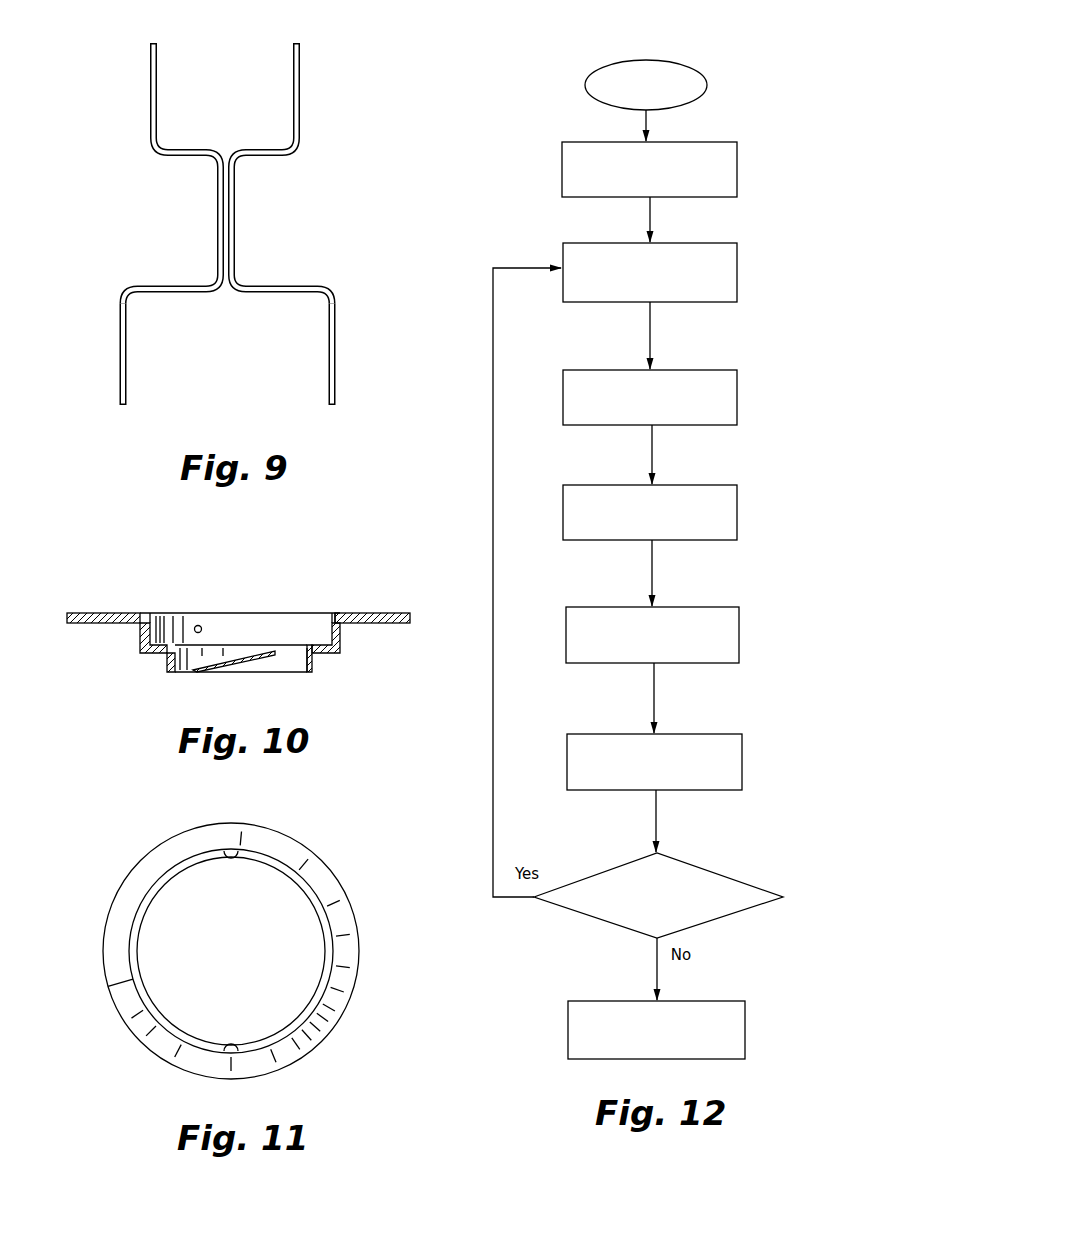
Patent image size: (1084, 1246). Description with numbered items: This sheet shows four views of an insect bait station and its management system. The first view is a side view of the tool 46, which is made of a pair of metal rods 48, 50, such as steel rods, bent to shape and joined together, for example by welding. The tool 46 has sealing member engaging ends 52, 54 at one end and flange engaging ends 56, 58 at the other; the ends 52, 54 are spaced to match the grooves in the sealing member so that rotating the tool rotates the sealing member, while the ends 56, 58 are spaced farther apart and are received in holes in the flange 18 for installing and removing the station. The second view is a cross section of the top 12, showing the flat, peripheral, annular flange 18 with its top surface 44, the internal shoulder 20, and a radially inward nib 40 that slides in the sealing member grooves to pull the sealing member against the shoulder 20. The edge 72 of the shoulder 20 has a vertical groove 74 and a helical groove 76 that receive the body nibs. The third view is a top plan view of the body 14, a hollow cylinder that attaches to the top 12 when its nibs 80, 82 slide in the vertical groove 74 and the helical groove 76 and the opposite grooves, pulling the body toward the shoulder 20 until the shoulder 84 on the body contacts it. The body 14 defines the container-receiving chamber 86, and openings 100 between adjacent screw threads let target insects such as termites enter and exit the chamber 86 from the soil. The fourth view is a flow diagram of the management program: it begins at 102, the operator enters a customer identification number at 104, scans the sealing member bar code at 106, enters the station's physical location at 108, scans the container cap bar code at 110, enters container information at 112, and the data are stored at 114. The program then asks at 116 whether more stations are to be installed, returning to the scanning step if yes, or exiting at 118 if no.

In FIG. 9, the tool 46 is at (143, 213).
In FIG. 9, the metal rod 48 is at (235, 218).
In FIG. 9, the metal rod 50 is at (217, 217).
In FIG. 9, the sealing member engaging end 52 is at (299, 43).
In FIG. 9, the sealing member engaging end 54 is at (157, 43).
In FIG. 9, the flange engaging end 56 is at (333, 407).
In FIG. 9, the flange engaging end 58 is at (122, 407).
In FIG. 10, the top 12 is at (355, 660).
In FIG. 10, the flange 18 is at (385, 623).
In FIG. 10, the shoulder 20 is at (160, 640).
In FIG. 10, the nib 40 is at (199, 625).
In FIG. 10, the top surface of the flange 44 is at (90, 612).
In FIG. 10, the edge of the shoulder 72 is at (307, 660).
In FIG. 10, the vertical groove 74 is at (192, 670).
In FIG. 10, the helical groove 76 is at (237, 663).
In FIG. 11, the body 14 is at (95, 892).
In FIG. 11, the nib 80 is at (223, 853).
In FIG. 11, the nib 82 is at (225, 1052).
In FIG. 11, the shoulder 84 is at (153, 883).
In FIG. 11, the toxicant/bait container-receiving chamber 86 is at (231, 951).
In FIG. 11, the openings 100 is at (130, 1022).
In FIG. 12, the start step 102 is at (705, 75).
In FIG. 12, the enter customer identification step 104 is at (737, 167).
In FIG. 12, the scan bait station bar code step 106 is at (737, 262).
In FIG. 12, the enter station location step 108 is at (737, 387).
In FIG. 12, the scan container bar code step 110 is at (737, 503).
In FIG. 12, the enter container information step 112 is at (739, 623).
In FIG. 12, the store data step 114 is at (744, 741).
In FIG. 12, the additional stations prompt step 116 is at (733, 879).
In FIG. 12, the exit step 118 is at (716, 1001).